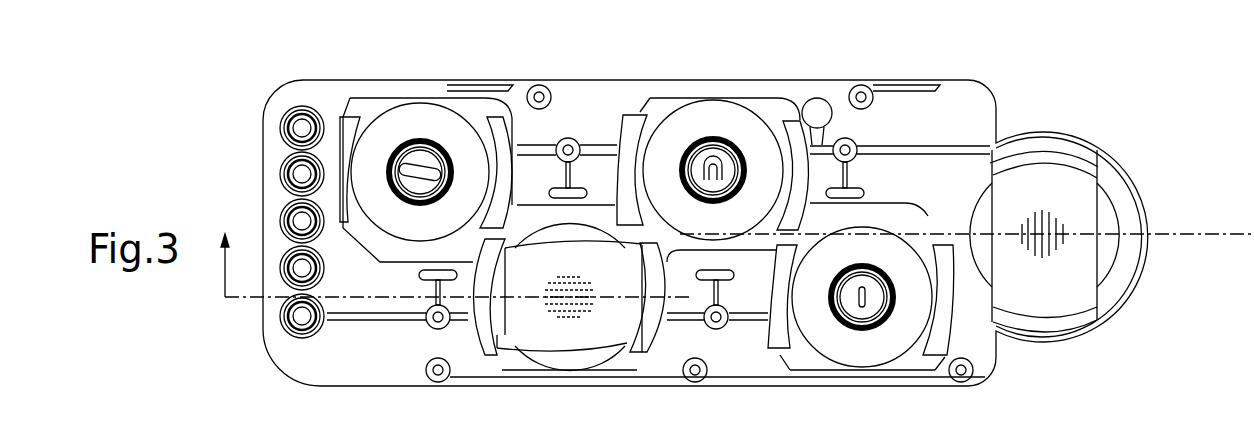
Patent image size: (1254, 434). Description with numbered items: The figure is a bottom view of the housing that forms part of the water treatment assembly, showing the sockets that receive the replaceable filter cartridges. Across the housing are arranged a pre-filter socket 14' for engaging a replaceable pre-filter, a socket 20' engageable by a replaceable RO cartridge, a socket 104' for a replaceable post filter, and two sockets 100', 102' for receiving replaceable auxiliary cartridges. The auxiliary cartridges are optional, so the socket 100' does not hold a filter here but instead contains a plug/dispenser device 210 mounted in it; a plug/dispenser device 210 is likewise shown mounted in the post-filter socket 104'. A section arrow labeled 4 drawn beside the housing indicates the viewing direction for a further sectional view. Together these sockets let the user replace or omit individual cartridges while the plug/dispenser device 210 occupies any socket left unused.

The pre-filter socket 14' is at (426, 140).
The socket 20' is at (713, 129).
The socket 100' is at (574, 329).
The socket 102' is at (861, 330).
The socket 104' is at (1108, 237).
The plug/dispenser device 210 is at (1077, 280).
The section line of Fig. 4 is at (224, 252).